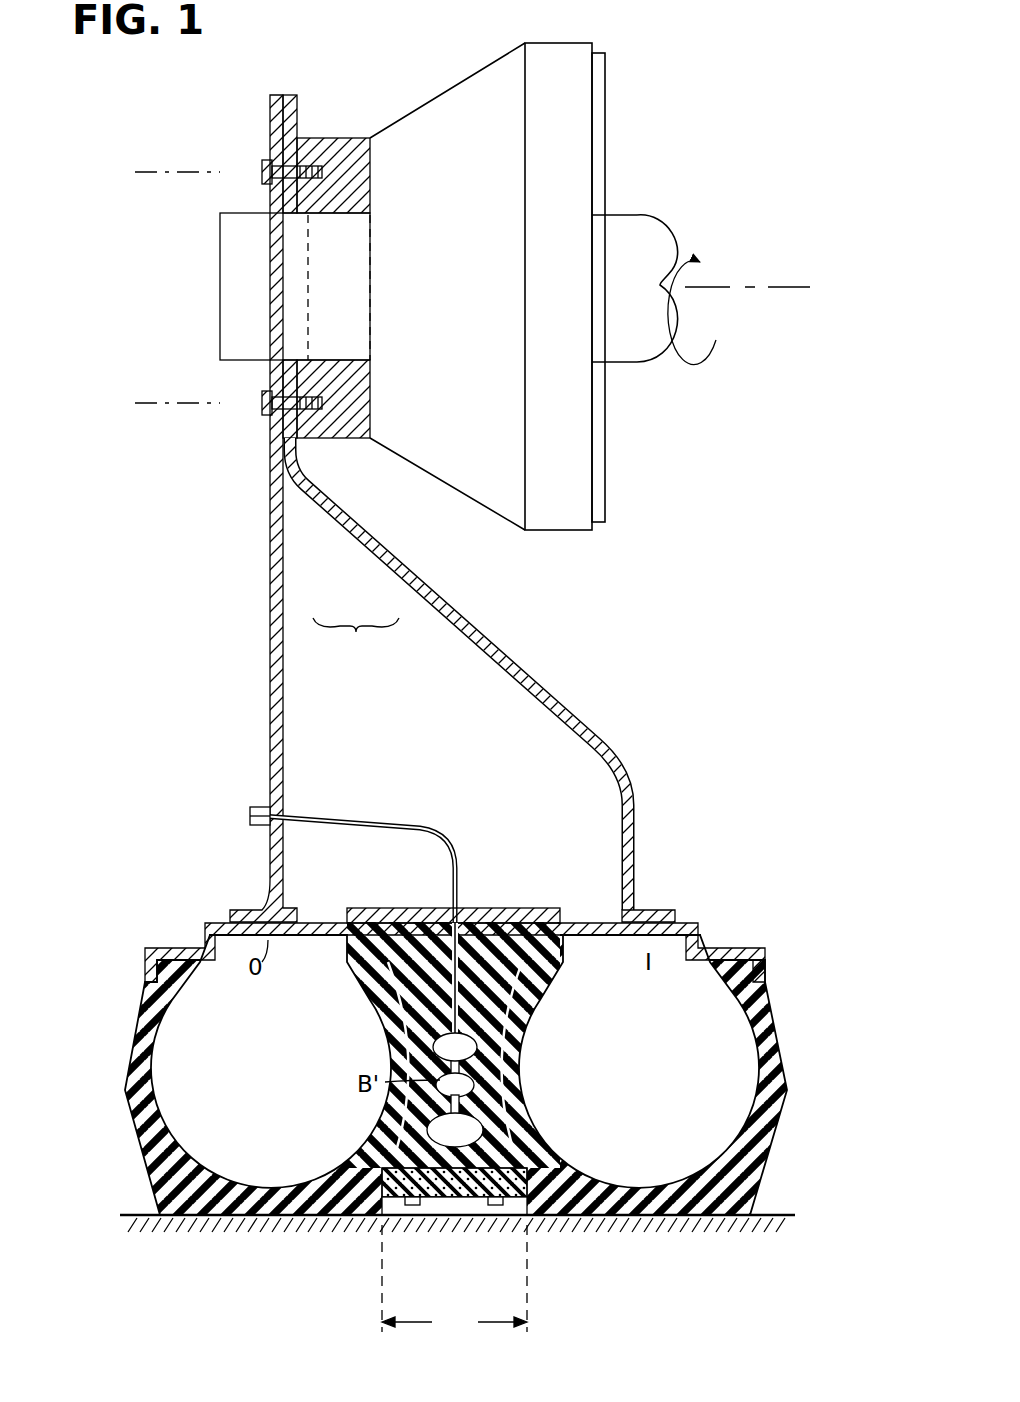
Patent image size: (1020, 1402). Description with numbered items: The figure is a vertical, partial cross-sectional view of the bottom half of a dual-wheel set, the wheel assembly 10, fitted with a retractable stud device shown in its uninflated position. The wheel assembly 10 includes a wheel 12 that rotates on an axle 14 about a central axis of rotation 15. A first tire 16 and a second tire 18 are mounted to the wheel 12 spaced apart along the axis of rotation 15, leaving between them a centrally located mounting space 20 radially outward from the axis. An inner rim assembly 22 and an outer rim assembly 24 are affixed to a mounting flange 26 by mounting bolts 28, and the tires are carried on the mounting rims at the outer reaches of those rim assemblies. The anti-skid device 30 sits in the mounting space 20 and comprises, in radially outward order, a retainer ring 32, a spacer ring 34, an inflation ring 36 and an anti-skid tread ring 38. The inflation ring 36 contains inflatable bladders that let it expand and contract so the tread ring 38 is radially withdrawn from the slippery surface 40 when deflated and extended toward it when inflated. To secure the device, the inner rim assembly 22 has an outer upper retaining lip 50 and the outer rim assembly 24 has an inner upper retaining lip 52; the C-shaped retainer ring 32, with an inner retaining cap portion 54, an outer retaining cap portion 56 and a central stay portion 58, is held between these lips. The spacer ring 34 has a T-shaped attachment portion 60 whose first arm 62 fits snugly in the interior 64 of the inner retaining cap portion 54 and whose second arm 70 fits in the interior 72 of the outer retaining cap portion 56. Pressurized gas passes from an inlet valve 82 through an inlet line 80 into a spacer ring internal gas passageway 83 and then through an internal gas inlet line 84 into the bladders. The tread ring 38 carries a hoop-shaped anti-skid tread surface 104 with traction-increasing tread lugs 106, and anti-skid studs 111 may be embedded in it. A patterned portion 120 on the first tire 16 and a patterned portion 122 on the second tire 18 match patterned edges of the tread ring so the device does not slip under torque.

The wheel assembly 10 is at (217, 705).
The wheel 12 is at (356, 637).
The axle 14 is at (648, 362).
The central axis of rotation 15 is at (778, 287).
The first tire 16 is at (783, 1055).
The second tire 18 is at (130, 1070).
The mounting space 20 is at (454, 1323).
The inner rim assembly 22 is at (418, 585).
The outer rim assembly 24 is at (285, 592).
The mounting flange 26 is at (338, 136).
The mounting bolts 28 is at (264, 162).
The anti-skid device 30 is at (478, 925).
The retainer ring 32 is at (556, 906).
The spacer ring 34 is at (468, 905).
The inflation ring 36 is at (505, 1090).
The anti-skid tread ring 38 is at (545, 1145).
The slippery surface 40 is at (776, 1210).
The outer upper retaining lip 50 is at (575, 952).
The inner upper retaining lip 52 is at (338, 965).
The inner retaining cap portion 54 is at (570, 922).
The outer retaining cap portion 56 is at (348, 912).
The central stay portion 58 is at (403, 906).
The attachment portion 60 is at (432, 906).
The first arm 62 is at (532, 906).
The interior of inner retaining cap portion 64 is at (588, 944).
The second arm 70 is at (362, 906).
The interior of outer retaining cap portion 72 is at (335, 940).
The inlet line 80 is at (345, 826).
The inlet valve 82 is at (262, 806).
The spacer ring internal gas passageway 83 is at (552, 1000).
The internal gas inlet line 84 is at (390, 1012).
The anti-skid tread surface 104 is at (392, 1205).
The tread lugs 106 is at (440, 1205).
The anti-skid studs 111 is at (405, 1245).
The patterned portion 120 is at (555, 1216).
The patterned portion 122 is at (352, 1216).